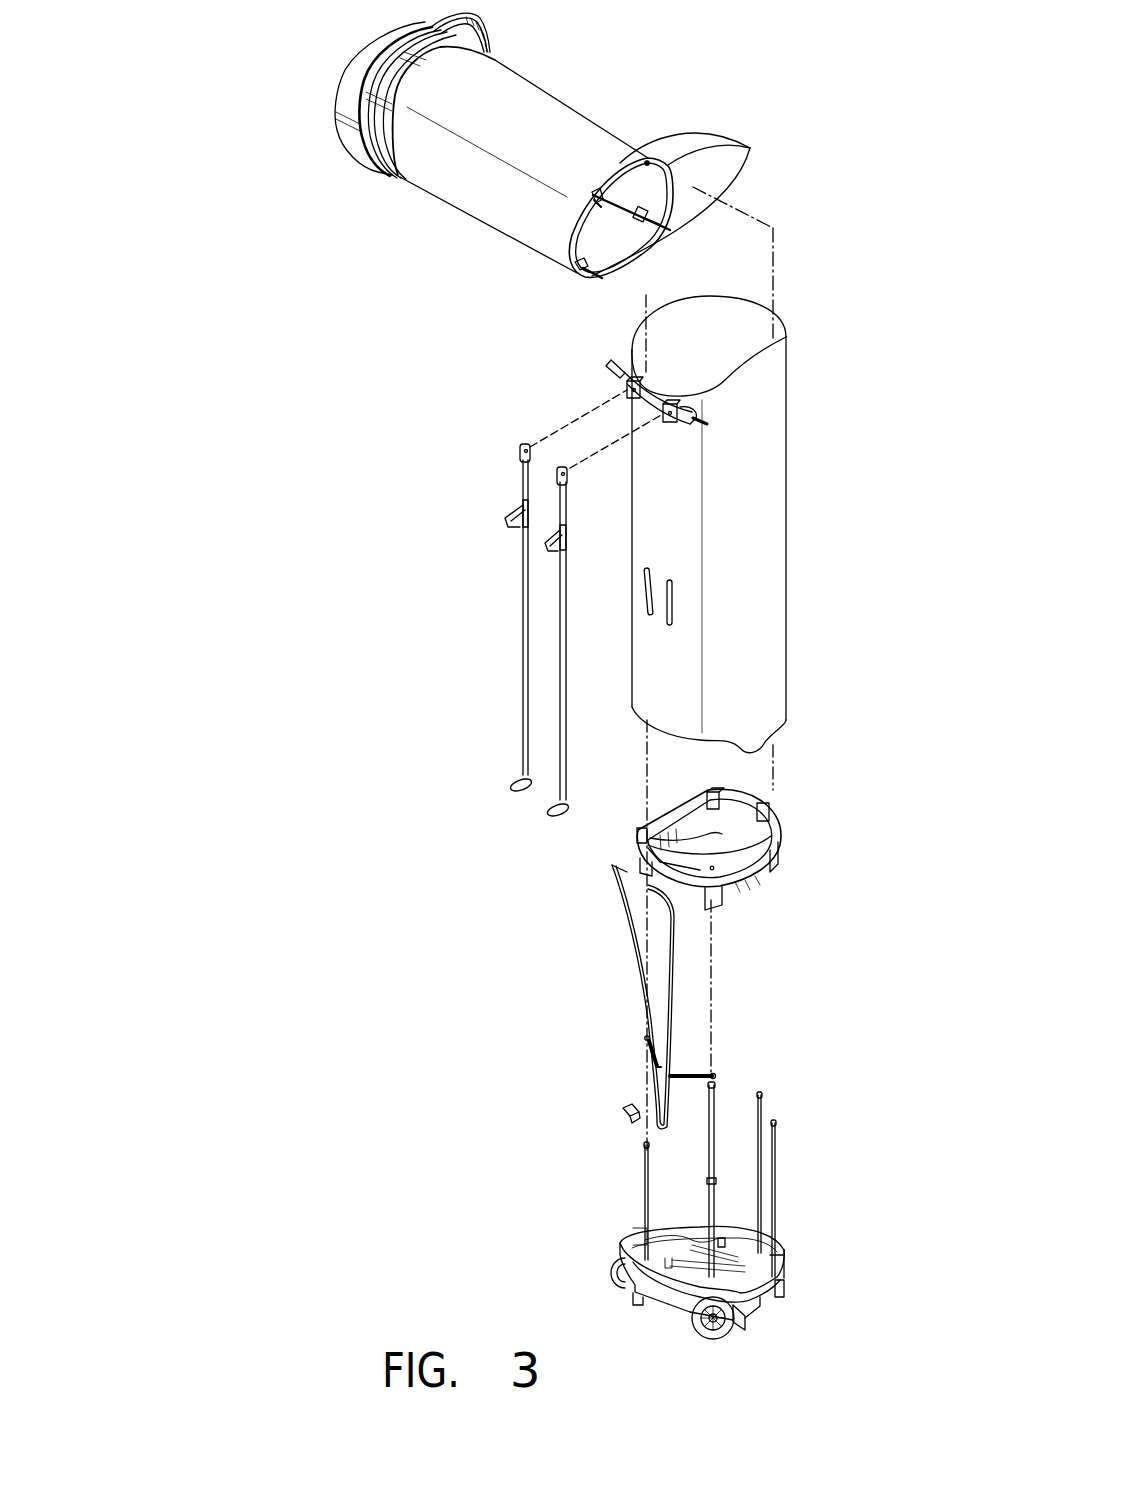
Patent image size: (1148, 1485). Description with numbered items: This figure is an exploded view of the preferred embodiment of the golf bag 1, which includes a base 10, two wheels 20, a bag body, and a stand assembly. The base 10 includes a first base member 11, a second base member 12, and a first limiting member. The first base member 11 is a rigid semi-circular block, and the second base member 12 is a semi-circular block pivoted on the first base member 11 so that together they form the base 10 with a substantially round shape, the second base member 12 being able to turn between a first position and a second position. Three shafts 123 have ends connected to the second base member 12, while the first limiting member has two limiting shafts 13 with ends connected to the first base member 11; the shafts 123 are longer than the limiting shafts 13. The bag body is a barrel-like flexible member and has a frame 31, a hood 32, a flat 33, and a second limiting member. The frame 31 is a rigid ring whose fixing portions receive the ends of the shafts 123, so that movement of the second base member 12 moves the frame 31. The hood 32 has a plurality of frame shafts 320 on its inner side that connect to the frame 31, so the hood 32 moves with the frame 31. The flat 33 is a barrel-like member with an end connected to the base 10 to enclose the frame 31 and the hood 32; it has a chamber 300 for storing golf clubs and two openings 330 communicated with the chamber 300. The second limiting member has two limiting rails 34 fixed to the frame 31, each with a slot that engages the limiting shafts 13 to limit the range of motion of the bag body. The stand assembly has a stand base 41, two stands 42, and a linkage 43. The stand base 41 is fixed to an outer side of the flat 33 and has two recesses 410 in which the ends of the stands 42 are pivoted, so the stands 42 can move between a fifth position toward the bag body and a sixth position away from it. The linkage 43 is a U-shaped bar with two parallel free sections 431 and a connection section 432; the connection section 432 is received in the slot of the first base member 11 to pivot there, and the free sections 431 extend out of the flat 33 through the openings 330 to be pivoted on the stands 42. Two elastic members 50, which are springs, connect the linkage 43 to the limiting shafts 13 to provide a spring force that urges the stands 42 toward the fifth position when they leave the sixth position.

The golf bag 1 is at (216, 172).
The base 10 is at (787, 1297).
The first base member 11 is at (755, 1290).
The second base member 12 is at (775, 1285).
The limiting shafts 13 is at (711, 1214).
The shafts 123 is at (715, 1097).
The wheels 20 is at (693, 1337).
The chamber 300 is at (706, 364).
The frame 31 is at (773, 852).
The hood 32 is at (561, 116).
The frame shafts 320 is at (648, 158).
The flat 33 is at (787, 527).
The openings 330 is at (669, 618).
The limiting rails 34 is at (696, 845).
The stand base 41 is at (634, 386).
The recesses 410 is at (667, 407).
The stands 42 is at (563, 680).
The linkage 43 is at (510, 960).
The free sections 431 is at (657, 1128).
The connection section 432 is at (670, 975).
The elastic members 50 is at (653, 1040).